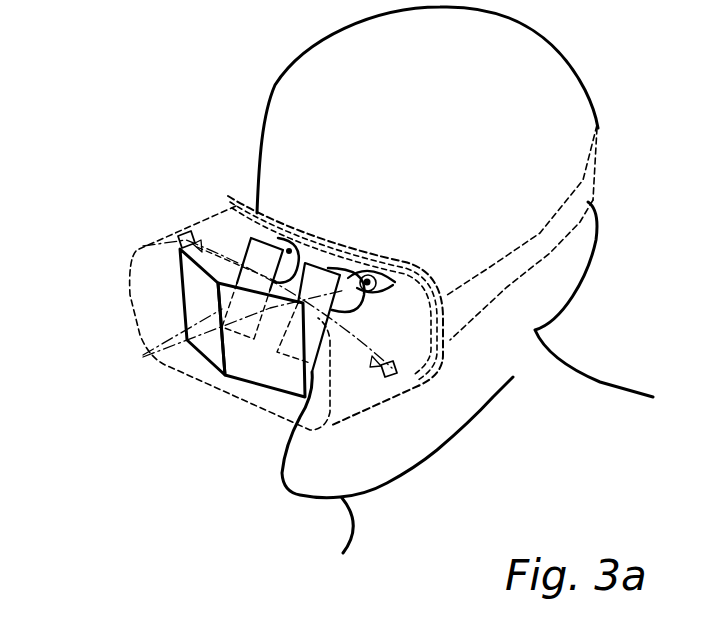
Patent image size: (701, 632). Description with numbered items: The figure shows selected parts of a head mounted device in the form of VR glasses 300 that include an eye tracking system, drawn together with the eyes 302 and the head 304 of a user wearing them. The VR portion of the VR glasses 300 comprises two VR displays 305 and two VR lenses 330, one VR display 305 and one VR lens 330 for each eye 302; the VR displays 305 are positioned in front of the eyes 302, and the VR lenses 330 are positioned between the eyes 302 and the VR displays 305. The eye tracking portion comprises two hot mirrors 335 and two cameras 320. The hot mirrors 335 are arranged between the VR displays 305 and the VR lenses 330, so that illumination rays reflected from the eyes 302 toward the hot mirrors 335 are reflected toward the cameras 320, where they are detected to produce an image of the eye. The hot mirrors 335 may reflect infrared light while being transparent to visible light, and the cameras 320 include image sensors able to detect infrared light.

The VR glasses 300 is at (132, 258).
The eyes 302 is at (287, 240).
The head 304 is at (572, 78).
The VR displays 305 is at (203, 350).
The cameras 320 is at (183, 236).
The VR lenses 330 is at (305, 243).
The hot mirrors 335 is at (249, 257).